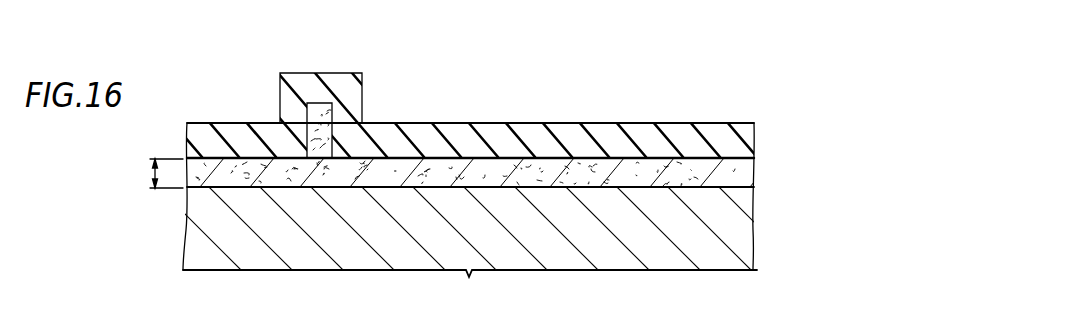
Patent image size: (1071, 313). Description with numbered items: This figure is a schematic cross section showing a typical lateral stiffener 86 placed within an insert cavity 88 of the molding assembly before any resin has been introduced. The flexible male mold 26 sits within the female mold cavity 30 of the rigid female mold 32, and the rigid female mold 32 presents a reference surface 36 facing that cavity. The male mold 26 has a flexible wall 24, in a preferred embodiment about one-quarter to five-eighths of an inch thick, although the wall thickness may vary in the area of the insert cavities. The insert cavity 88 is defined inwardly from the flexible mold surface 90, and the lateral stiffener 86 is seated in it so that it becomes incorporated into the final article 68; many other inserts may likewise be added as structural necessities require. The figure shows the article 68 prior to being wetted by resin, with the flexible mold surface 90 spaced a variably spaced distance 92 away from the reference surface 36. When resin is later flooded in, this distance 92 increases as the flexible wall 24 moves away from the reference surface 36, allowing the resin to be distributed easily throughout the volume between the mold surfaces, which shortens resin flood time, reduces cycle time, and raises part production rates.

The female mold cavity 30 is at (735, 85).
The flexible male mold 26 is at (752, 137).
The article 68 is at (746, 173).
The rigid female mold 32 is at (745, 238).
The flexible wall 24 is at (408, 137).
The flexible mold surface 90 is at (477, 162).
The reference surface 36 is at (567, 177).
The lateral stiffener 86 is at (305, 108).
The insert cavity 88 is at (323, 110).
The variably spaced distance 92 is at (152, 173).